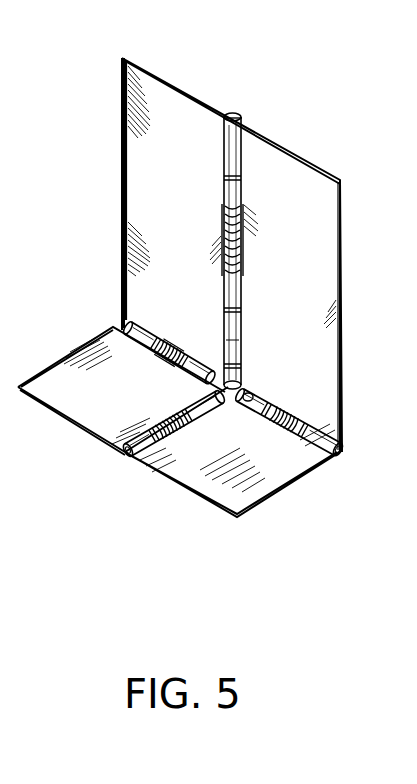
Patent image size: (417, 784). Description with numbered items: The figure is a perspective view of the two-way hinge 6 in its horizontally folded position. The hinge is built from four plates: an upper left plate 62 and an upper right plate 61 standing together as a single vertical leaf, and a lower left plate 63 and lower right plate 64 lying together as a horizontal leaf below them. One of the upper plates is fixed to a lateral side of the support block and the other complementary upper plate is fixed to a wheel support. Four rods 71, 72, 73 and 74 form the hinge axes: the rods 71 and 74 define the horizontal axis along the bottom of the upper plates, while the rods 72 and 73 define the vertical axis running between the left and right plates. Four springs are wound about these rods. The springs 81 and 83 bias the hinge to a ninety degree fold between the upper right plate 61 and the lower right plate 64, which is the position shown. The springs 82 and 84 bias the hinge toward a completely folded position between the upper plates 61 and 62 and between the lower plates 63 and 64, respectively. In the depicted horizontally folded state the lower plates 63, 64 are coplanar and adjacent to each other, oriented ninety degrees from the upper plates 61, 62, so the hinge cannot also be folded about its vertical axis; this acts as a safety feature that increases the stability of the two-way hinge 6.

The two-way hinge 6 is at (194, 74).
The upper right plate 61 is at (343, 305).
The upper left plate 62 is at (124, 220).
The lower left plate 63 is at (86, 408).
The lower right plate 64 is at (258, 498).
The rod 71 is at (346, 455).
The rod 72 is at (128, 459).
The rod 73 is at (243, 180).
The rod 74 is at (133, 326).
The spring 81 is at (279, 389).
The spring 82 is at (247, 231).
The spring 83 is at (101, 347).
The spring 84 is at (168, 463).